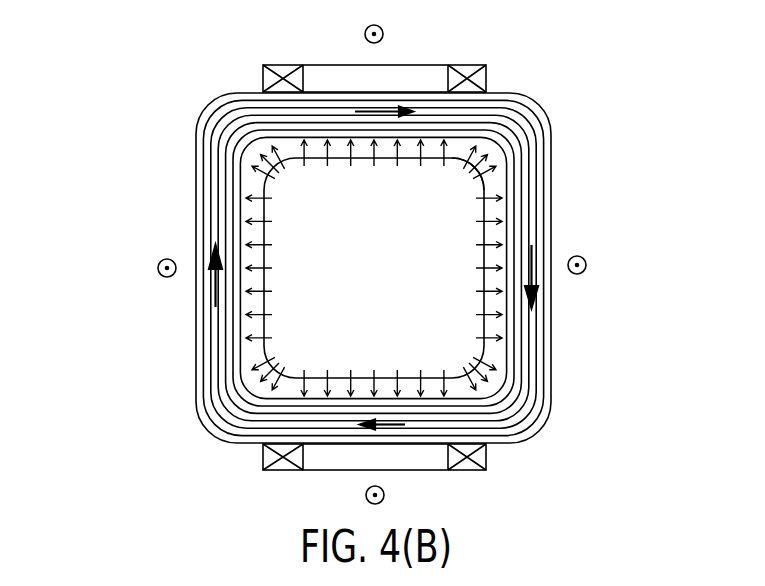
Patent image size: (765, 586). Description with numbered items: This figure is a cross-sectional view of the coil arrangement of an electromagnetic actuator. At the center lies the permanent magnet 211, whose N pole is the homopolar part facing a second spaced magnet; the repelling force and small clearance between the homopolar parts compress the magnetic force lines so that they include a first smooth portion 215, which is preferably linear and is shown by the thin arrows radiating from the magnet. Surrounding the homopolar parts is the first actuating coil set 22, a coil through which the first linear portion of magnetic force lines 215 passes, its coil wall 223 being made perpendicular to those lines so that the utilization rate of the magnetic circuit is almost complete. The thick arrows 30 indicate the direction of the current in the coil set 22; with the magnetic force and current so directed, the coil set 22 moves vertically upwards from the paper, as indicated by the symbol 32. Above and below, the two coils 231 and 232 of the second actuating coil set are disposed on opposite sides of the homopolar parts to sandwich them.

The first actuating coil set 22 is at (515, 232).
The arrow indicating current direction 30 is at (537, 272).
The symbol indicating movement direction 32 is at (382, 28).
The permanent magnet 211 is at (463, 187).
The first smooth portion of magnetic force lines 215 is at (462, 160).
The coil wall 223 is at (247, 222).
The coil of second actuating coil set 231 is at (474, 64).
The coil of second actuating coil set 232 is at (484, 456).